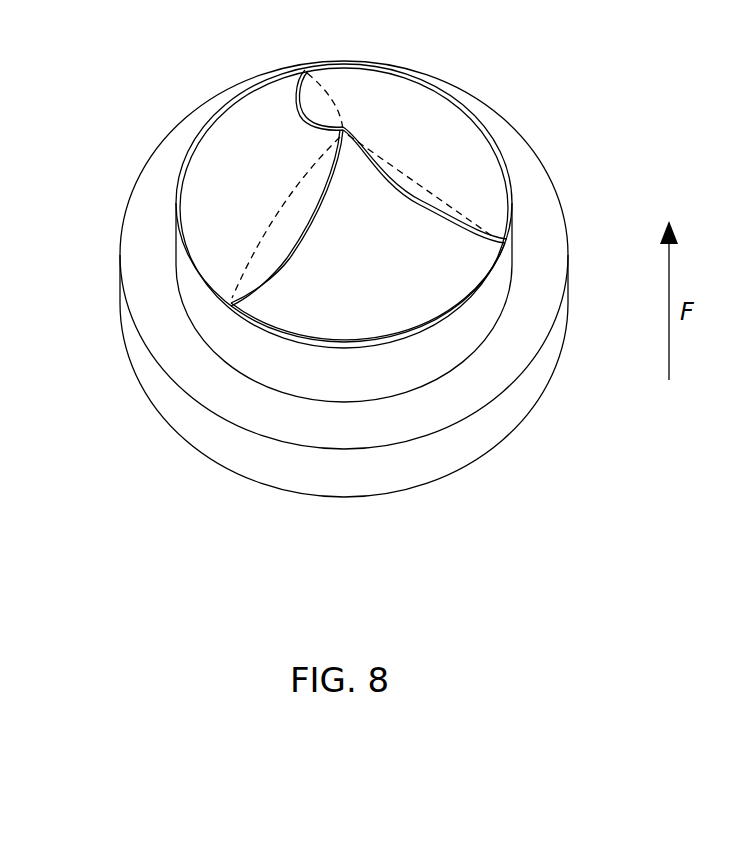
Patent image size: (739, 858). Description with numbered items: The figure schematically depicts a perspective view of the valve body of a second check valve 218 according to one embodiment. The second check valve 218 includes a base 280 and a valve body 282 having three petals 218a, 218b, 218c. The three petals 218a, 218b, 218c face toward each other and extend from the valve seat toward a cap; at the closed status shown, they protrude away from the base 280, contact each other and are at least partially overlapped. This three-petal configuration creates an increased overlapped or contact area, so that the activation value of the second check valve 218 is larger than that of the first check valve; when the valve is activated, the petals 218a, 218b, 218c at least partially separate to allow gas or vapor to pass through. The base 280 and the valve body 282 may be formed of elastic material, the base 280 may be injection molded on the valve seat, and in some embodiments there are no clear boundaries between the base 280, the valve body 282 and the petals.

The second check valve 218 is at (327, 280).
The petal 218a is at (390, 112).
The petal 218b is at (350, 313).
The petal 218c is at (230, 163).
The base 280 is at (263, 412).
The valve body 282 is at (233, 335).